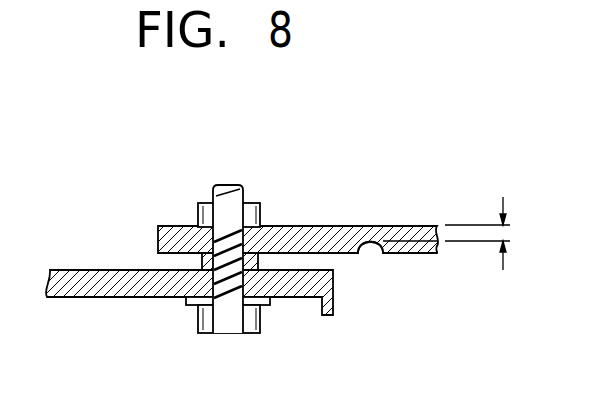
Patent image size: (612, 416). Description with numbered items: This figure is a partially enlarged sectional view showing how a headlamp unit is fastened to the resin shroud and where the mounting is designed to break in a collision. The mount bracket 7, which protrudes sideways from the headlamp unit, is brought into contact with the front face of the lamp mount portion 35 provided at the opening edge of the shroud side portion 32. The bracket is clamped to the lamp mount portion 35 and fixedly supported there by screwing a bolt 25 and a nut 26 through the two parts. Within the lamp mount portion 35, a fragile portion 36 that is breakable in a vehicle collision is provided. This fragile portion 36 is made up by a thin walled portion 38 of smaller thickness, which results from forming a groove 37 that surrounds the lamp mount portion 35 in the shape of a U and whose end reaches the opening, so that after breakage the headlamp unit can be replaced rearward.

The mount bracket 7 is at (90, 298).
The bolt 25 is at (235, 333).
The nut 26 is at (260, 216).
The shroud side portion 32 is at (412, 254).
The lamp mount portion 35 is at (295, 253).
The fragile portion 36 is at (378, 226).
The groove 37 is at (361, 247).
The thin walled portion 38 is at (482, 213).